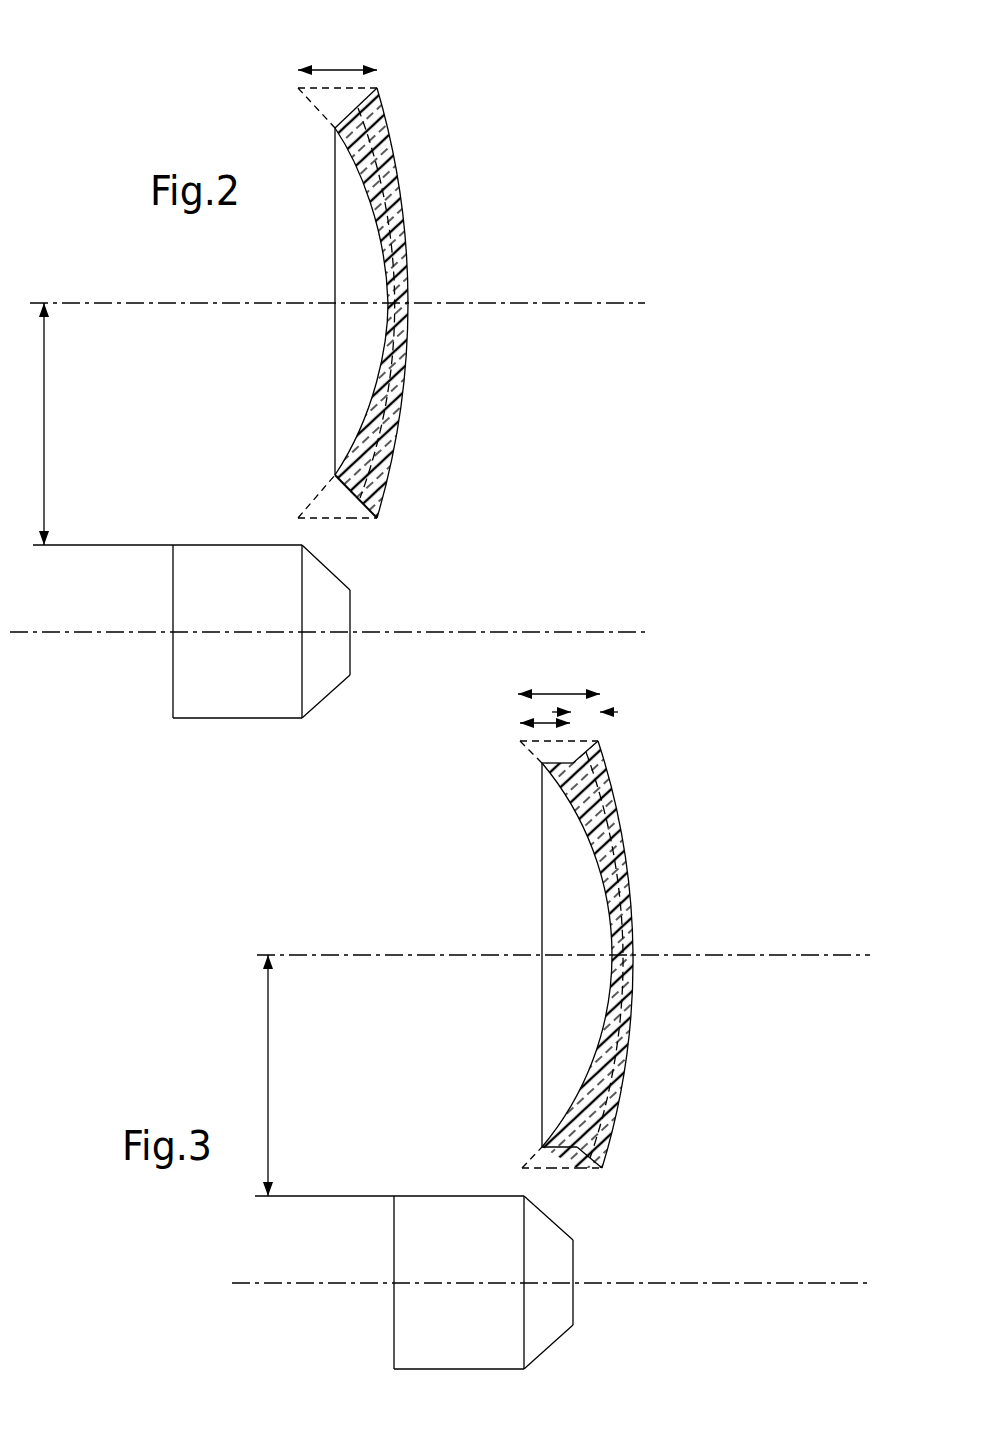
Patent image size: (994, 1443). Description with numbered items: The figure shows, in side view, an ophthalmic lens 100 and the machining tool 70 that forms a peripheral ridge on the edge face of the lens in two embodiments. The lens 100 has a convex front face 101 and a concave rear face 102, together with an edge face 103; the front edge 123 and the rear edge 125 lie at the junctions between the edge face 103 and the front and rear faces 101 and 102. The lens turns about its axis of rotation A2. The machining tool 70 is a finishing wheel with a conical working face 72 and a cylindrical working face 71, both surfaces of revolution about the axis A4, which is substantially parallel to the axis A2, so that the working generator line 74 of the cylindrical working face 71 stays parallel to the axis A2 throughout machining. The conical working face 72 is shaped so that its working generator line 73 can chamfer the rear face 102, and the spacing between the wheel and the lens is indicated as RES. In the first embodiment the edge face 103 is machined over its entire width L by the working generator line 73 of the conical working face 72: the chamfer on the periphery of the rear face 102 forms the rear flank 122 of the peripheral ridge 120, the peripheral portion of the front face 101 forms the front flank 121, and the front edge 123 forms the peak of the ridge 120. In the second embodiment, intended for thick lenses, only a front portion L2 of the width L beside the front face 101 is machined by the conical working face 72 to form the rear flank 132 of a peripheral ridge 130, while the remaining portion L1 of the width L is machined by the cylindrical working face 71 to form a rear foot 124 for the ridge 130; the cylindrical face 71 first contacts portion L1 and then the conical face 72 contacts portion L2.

In FIG. 2, the ophthalmic lens 100 is at (403, 127).
In FIG. 3, the ophthalmic lens 100 is at (634, 837).
In FIG. 2, the convex front face 101 is at (405, 407).
In FIG. 3, the convex front face 101 is at (633, 1043).
In FIG. 2, the concave rear face 102 is at (377, 403).
In FIG. 3, the concave rear face 102 is at (604, 1033).
In FIG. 2, the edge face 103 is at (348, 522).
In FIG. 3, the edge face 103 is at (522, 1170).
In FIG. 2, the peripheral ridge 120 is at (378, 485).
In FIG. 2, the front flank 121 is at (386, 490).
In FIG. 3, the front flank 121 is at (618, 1130).
In FIG. 2, the rear flank 122 is at (318, 500).
In FIG. 2, the front edge 123 is at (378, 520).
In FIG. 3, the front edge 123 is at (604, 1172).
In FIG. 3, the rear foot 124 is at (540, 1148).
In FIG. 2, the rear edge 125 is at (336, 477).
In FIG. 3, the rear edge 125 is at (540, 763).
In FIG. 3, the peripheral ridge 130 is at (606, 1148).
In FIG. 3, the rear flank 132 is at (582, 1170).
In FIG. 2, the machining tool 70 is at (232, 660).
In FIG. 3, the machining tool 70 is at (450, 1284).
In FIG. 2, the cylindrical working face 71 is at (227, 712).
In FIG. 3, the cylindrical working face 71 is at (405, 1343).
In FIG. 2, the conical working face 72 is at (329, 688).
In FIG. 3, the conical working face 72 is at (537, 1333).
In FIG. 2, the working generator line 73 is at (337, 562).
In FIG. 3, the working generator line 73 is at (558, 1218).
In FIG. 2, the working generator line 74 is at (192, 547).
In FIG. 3, the working generator line 74 is at (437, 1197).
In FIG. 2, the width of the edge face L is at (340, 64).
In FIG. 3, the width of the edge face L is at (600, 693).
In FIG. 3, the remaining portion of the width L1 is at (520, 724).
In FIG. 3, the front portion of the width L2 is at (588, 713).
In FIG. 2, the axis of rotation of the lens A2 is at (578, 300).
In FIG. 3, the axis of rotation of the lens A2 is at (836, 952).
In FIG. 2, the axis of rotation of the machining tool A4 is at (623, 630).
In FIG. 3, the axis of rotation of the machining tool A4 is at (816, 1280).
In FIG. 2, the reserve distance RES is at (46, 390).
In FIG. 3, the reserve distance RES is at (270, 1027).